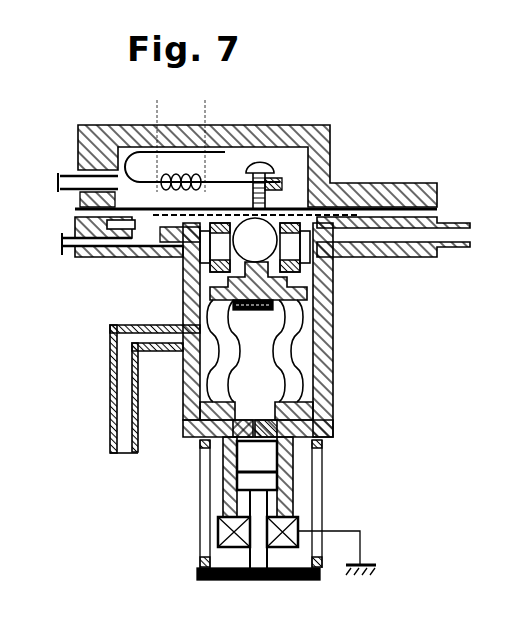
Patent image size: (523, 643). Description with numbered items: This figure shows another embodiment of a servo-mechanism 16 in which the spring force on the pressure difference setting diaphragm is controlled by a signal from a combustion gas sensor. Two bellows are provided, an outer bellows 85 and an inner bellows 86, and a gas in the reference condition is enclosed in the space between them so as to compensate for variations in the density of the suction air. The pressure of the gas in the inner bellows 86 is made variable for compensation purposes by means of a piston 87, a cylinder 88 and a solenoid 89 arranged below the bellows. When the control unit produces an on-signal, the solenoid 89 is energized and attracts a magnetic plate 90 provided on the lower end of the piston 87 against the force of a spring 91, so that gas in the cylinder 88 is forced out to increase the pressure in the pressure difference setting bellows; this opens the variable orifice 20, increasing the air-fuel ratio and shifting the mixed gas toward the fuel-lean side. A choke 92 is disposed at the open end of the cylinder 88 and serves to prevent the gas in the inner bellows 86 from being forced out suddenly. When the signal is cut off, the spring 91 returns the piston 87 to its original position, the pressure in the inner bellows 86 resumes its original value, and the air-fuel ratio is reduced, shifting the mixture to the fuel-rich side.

The servo-mechanism 16 is at (372, 124).
The variable orifice 20 is at (214, 266).
The outer bellows 85 is at (302, 330).
The inner bellows 86 is at (283, 366).
The choke 92 is at (253, 424).
The cylinder 88 is at (282, 458).
The piston 87 is at (268, 484).
The solenoid 89 is at (226, 531).
The spring 91 is at (207, 465).
The magnetic plate 90 is at (282, 580).